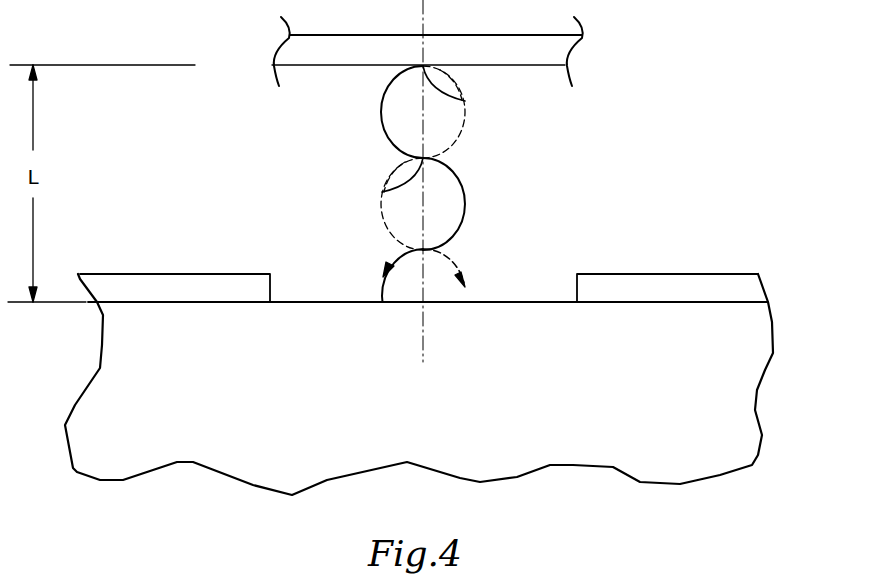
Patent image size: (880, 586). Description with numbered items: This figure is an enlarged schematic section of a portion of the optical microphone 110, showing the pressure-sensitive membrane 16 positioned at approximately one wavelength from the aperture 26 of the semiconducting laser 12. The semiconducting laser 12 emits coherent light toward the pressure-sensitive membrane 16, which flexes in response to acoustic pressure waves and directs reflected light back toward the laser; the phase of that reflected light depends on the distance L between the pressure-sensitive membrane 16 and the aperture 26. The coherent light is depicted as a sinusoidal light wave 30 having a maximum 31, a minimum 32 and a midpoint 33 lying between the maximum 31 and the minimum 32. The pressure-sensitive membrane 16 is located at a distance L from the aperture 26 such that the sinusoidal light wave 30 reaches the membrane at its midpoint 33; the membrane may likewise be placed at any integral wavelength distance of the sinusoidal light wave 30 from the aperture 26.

The optical microphone 110 is at (730, 22).
The pressure-sensitive membrane 16 is at (516, 35).
The semiconducting laser 12 is at (676, 262).
The aperture 26 is at (577, 290).
The sinusoidal light wave 30 is at (466, 250).
The maximum 31 is at (382, 112).
The minimum 32 is at (466, 203).
The midpoint 33 is at (467, 102).